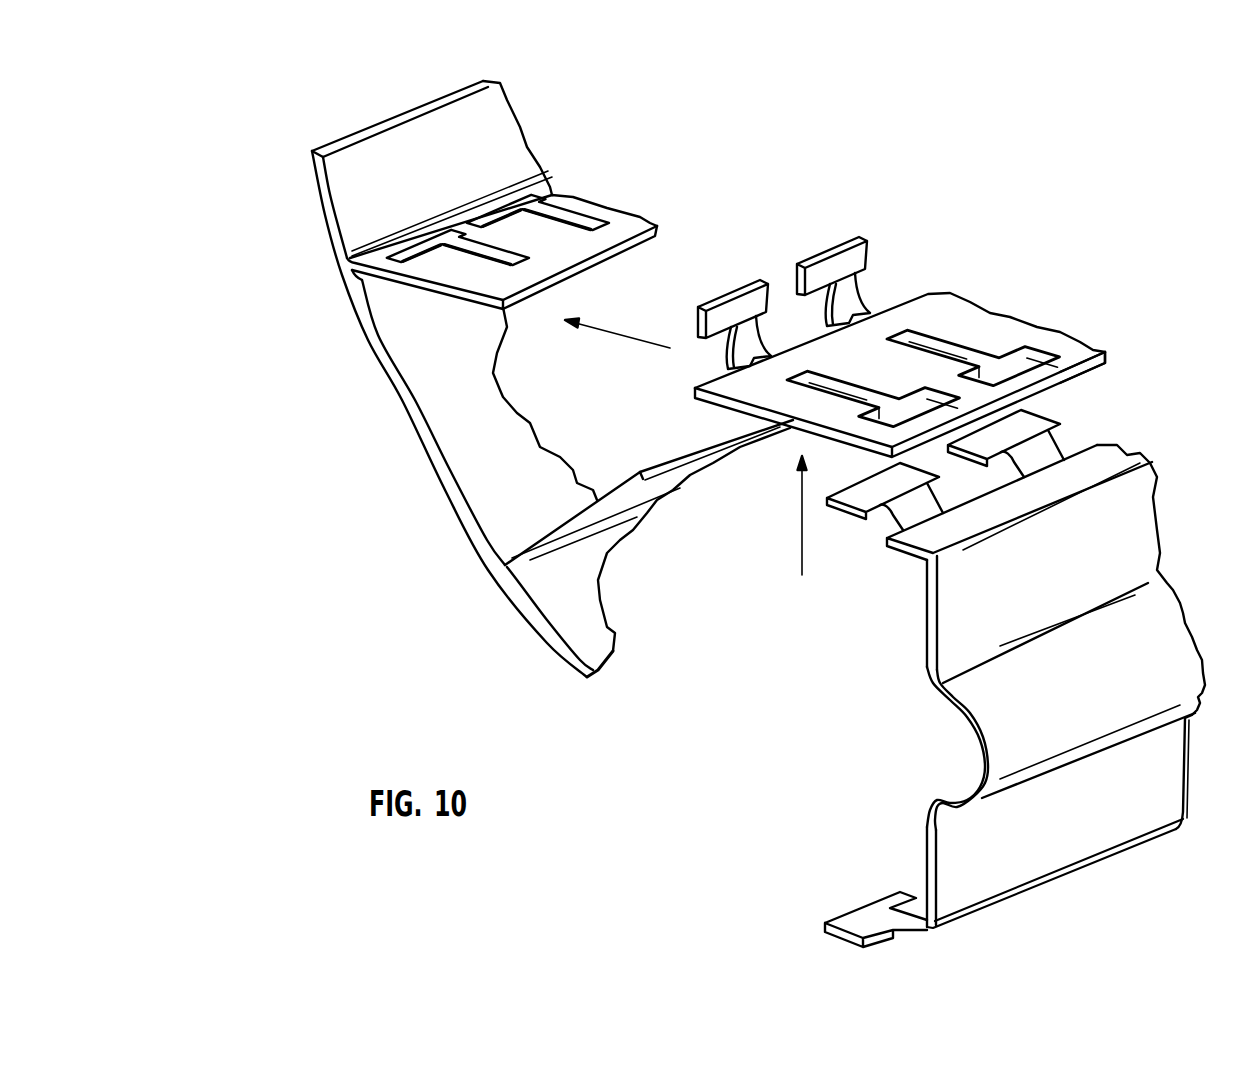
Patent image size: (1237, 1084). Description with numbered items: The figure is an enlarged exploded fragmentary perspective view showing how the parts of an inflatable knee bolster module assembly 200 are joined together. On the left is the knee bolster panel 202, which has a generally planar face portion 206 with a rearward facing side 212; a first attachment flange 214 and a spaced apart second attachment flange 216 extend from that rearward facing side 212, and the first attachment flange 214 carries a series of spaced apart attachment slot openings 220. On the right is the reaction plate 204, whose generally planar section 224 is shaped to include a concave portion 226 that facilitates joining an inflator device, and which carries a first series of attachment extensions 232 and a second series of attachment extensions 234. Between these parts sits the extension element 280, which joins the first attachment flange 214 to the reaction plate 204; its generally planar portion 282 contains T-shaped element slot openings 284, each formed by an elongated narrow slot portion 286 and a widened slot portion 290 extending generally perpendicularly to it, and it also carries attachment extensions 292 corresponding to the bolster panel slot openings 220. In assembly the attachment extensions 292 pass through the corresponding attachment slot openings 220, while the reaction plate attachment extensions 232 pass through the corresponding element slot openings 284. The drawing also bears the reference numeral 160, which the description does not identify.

The inflatable knee bolster module assembly 200 is at (786, 181).
The knee bolster panel 202 is at (358, 125).
The outer wall 160 is at (363, 335).
The face portion 206 is at (402, 417).
The rearward facing side 212 is at (493, 467).
The first attachment flange 214 is at (578, 213).
The second attachment flange 216 is at (650, 493).
The attachment slot openings 220 is at (457, 227).
The extension element 280 is at (1085, 295).
The planar portion 282 is at (930, 300).
The element slot openings 284 is at (1059, 344).
The elongated narrow slot portion 286 is at (947, 340).
The widened slot portion 290 is at (1043, 363).
The attachment extensions 292 is at (767, 253).
The reaction plate 204 is at (1107, 871).
The planar section 224 is at (929, 803).
The concave portion 226 is at (977, 755).
The first series of attachment extensions 232 is at (844, 512).
The second series of attachment extensions 234 is at (812, 937).